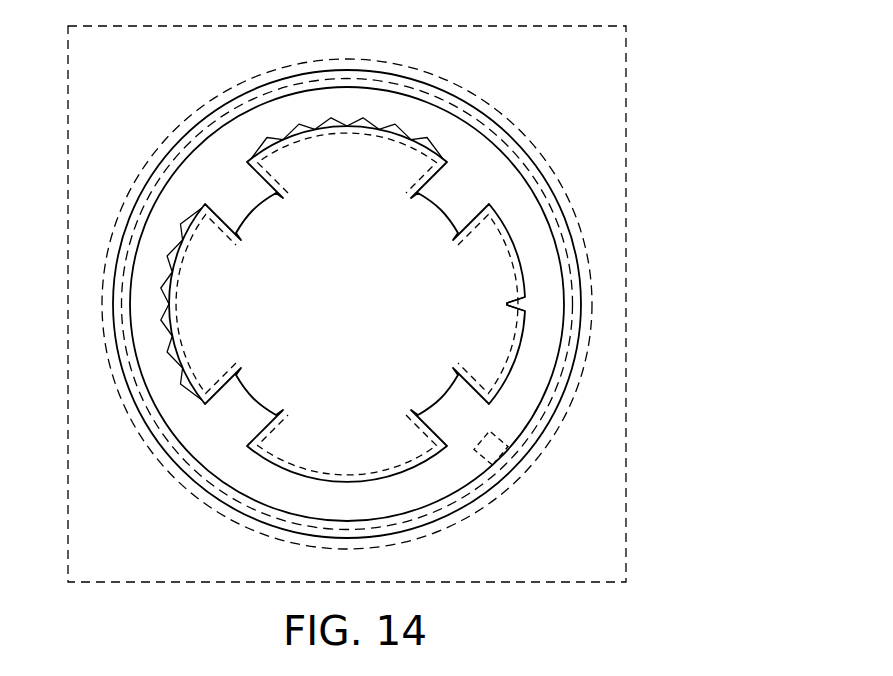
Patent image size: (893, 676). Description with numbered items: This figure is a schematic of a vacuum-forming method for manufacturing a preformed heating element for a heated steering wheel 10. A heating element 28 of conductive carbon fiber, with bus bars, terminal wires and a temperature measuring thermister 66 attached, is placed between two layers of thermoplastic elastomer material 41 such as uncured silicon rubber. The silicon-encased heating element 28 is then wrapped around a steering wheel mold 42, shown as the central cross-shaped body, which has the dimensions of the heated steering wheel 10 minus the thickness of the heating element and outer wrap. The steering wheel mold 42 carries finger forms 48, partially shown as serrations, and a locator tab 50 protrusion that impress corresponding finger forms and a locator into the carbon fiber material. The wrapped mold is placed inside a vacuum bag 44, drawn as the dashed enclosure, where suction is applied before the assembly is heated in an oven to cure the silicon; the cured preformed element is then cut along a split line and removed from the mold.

The heated steering wheel 10 is at (520, 108).
The heating element 28 is at (543, 173).
The thermoplastic elastomer material 41 is at (573, 219).
The steering wheel mold 42 is at (581, 367).
The vacuum bag 44 is at (623, 430).
The finger forms 48 is at (300, 130).
The locator tab 50 is at (513, 305).
The thermister 66 is at (505, 455).